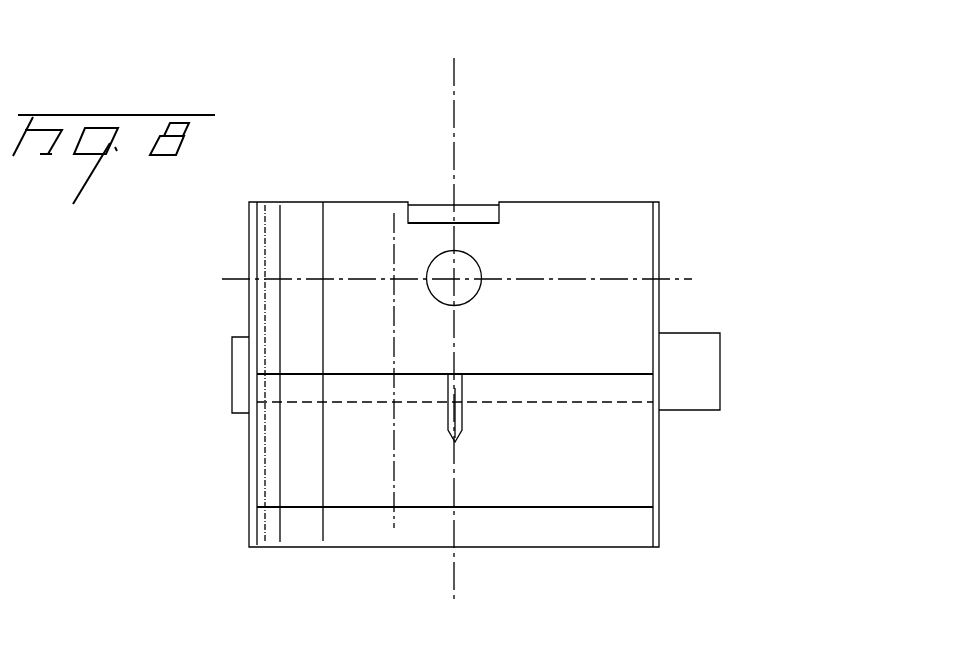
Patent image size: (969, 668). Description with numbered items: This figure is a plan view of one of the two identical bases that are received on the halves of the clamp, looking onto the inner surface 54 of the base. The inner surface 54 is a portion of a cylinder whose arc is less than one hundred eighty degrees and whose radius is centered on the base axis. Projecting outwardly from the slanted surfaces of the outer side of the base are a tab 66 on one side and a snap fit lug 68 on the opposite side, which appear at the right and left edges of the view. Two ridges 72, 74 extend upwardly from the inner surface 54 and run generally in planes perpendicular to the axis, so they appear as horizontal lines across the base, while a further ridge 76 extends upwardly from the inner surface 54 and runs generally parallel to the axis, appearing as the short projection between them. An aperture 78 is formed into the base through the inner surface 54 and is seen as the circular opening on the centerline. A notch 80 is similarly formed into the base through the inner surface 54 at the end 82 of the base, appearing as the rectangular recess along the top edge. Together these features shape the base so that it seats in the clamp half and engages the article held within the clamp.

The inner surface 54 is at (598, 335).
The tab 66 is at (715, 360).
The snap fit lug 68 is at (240, 374).
The ridge 72 is at (367, 507).
The ridge 74 is at (363, 374).
The ridge 76 is at (452, 417).
The aperture 78 is at (466, 293).
The notch 80 is at (475, 207).
The end 82 is at (375, 207).